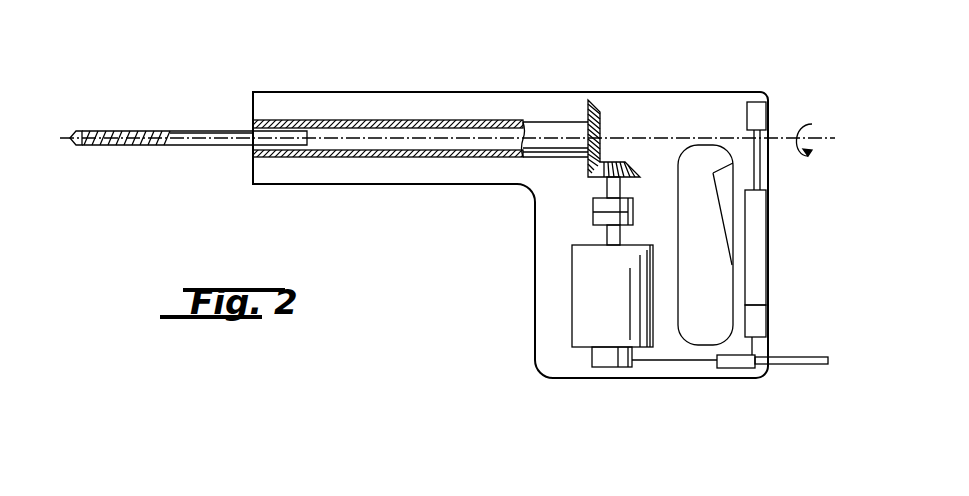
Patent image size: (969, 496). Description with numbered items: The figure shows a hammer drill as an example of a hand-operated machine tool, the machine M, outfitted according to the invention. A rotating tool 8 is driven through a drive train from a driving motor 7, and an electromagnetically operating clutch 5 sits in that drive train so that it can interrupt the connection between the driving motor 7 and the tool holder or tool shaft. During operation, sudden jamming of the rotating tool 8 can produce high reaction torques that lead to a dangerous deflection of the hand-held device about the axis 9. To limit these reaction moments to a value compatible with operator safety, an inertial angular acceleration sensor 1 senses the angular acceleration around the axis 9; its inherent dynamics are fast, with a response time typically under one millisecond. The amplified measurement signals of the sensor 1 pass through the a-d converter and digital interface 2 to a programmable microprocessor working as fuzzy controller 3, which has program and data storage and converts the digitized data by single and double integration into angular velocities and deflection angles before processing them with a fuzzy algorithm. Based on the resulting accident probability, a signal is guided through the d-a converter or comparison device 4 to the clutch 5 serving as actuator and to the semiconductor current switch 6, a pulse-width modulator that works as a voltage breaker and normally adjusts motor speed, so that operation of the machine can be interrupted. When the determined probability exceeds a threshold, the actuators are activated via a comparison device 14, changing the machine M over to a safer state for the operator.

The machine M is at (667, 103).
The rotating tool 8 is at (125, 130).
The inertial angular acceleration sensor 1 is at (762, 113).
The axis 9 is at (822, 140).
The digital interface 2 is at (788, 247).
The microprocessor as fuzzy controller 3 is at (755, 247).
The d-a converter 4 is at (755, 247).
The comparison device 14 is at (760, 322).
The semiconductor current switch 6 is at (740, 366).
The driving motor 7 is at (575, 310).
The clutch 5 is at (593, 212).